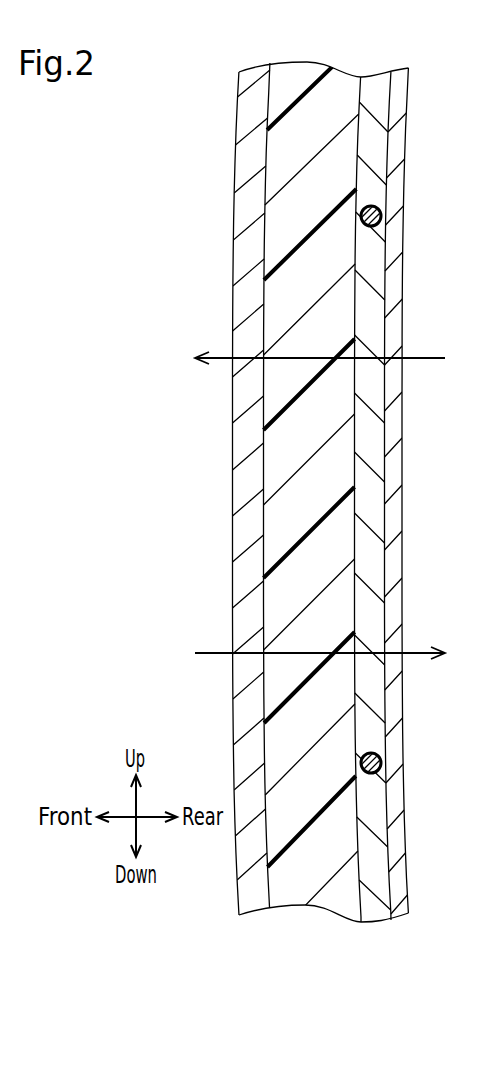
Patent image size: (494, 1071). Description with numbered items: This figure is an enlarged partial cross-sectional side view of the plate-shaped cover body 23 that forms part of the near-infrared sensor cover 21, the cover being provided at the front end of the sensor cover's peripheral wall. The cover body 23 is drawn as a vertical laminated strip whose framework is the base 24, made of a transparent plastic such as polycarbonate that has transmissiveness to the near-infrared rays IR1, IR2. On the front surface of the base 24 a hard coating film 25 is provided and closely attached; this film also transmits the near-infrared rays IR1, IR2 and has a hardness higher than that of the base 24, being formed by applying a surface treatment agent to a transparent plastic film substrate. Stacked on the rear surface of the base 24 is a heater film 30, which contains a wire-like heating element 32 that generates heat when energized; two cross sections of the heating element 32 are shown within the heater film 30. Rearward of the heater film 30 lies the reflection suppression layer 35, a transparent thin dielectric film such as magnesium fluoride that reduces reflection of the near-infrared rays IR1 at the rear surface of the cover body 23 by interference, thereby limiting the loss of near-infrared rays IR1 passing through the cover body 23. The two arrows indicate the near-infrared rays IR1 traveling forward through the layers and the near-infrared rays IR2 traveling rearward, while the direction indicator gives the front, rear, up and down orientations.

The near-infrared sensor cover 21 is at (275, 489).
The cover body 23 is at (227, 116).
The base 24 is at (282, 182).
The hard coating film 25 is at (243, 258).
The heater film 30 is at (378, 147).
The heating element 32 is at (382, 220).
The reflection suppression layer 35 is at (395, 565).
The near-infrared rays IR1 is at (427, 360).
The near-infrared rays IR2 is at (418, 658).